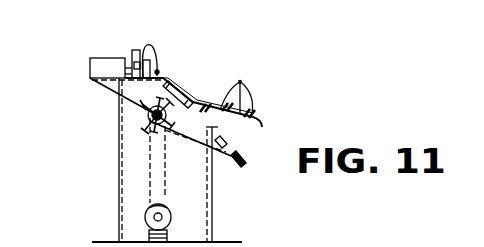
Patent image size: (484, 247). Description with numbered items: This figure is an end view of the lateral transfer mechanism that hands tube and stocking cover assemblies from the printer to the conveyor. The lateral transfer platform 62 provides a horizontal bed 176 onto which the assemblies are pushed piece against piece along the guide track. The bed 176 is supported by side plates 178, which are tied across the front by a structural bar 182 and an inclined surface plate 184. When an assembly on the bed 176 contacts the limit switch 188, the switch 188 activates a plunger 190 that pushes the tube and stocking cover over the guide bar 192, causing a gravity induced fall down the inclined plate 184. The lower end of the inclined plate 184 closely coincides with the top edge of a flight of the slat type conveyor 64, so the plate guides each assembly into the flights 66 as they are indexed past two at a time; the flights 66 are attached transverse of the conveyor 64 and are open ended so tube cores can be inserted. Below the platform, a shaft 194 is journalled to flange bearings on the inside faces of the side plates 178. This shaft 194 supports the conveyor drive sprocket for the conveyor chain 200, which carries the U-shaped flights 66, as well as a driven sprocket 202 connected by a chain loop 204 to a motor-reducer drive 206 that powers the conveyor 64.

The lateral transfer platform 62 is at (178, 38).
The slat type conveyor 64 is at (287, 95).
The flights 66 is at (246, 89).
The horizontal bed 176 is at (148, 58).
The side plates 178 is at (124, 193).
The structural bar 182 is at (212, 138).
The inclined surface plate 184 is at (180, 106).
The limit switch 188 is at (140, 44).
The plunger 190 is at (90, 66).
The guide bar 192 is at (156, 70).
The shaft 194 is at (116, 99).
The conveyor chain 200 is at (258, 121).
The driven sprocket 202 is at (178, 80).
The chain loop 204 is at (150, 160).
The motor-reducer drive 206 is at (136, 215).